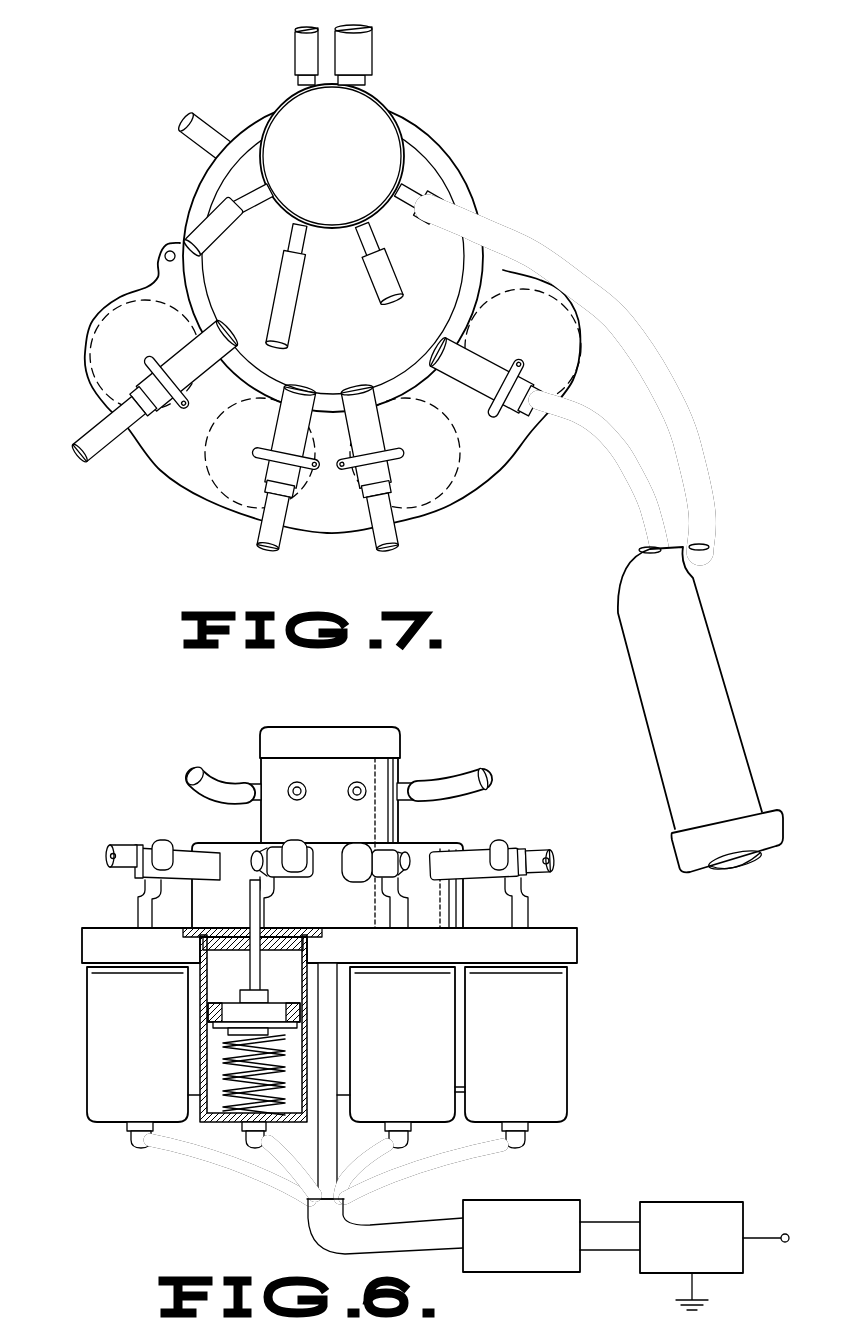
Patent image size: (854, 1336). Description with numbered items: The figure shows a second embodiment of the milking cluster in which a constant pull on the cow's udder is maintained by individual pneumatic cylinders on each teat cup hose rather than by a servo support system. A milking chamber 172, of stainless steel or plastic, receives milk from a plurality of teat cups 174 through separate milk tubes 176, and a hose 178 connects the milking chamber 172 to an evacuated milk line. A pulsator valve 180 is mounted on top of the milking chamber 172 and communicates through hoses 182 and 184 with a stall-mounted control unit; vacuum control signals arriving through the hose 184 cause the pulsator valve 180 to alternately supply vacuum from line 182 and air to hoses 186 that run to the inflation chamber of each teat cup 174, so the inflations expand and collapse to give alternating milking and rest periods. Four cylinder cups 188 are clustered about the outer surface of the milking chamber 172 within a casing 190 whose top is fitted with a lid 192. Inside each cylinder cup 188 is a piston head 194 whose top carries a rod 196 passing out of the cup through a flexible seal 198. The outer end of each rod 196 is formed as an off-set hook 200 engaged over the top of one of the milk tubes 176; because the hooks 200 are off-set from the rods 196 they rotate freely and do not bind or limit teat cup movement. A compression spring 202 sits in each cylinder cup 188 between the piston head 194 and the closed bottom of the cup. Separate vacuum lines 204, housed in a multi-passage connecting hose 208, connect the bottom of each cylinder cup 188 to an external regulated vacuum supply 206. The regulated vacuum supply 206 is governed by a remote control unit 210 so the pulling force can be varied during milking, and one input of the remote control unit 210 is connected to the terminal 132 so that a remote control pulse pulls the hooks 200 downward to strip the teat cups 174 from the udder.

In FIG. 6, the terminal 132 is at (785, 1232).
In FIG. 7, the milking chamber 172 is at (432, 185).
In FIG. 6, the milking chamber 172 is at (452, 843).
In FIG. 7, the teat cups 174 is at (715, 657).
In FIG. 7, the milk tubes 176 is at (618, 495).
In FIG. 6, the milk tubes 176 is at (113, 848).
In FIG. 7, the hose 178 is at (205, 112).
In FIG. 7, the pulsator valve 180 is at (377, 123).
In FIG. 6, the pulsator valve 180 is at (365, 733).
In FIG. 7, the hose 182 is at (373, 50).
In FIG. 7, the hose 184 is at (297, 55).
In FIG. 7, the hoses 186 is at (675, 397).
In FIG. 7, the cylinder cups 188 is at (577, 392).
In FIG. 6, the cylinder cups 188 is at (87, 1095).
In FIG. 6, the casing 190 is at (458, 1089).
In FIG. 6, the lid 192 is at (578, 952).
In FIG. 6, the piston head 194 is at (215, 1013).
In FIG. 6, the rod 196 is at (250, 967).
In FIG. 6, the flexible seal 198 is at (290, 937).
In FIG. 6, the off-set hook 200 is at (163, 840).
In FIG. 6, the compression spring 202 is at (223, 1050).
In FIG. 6, the vacuum lines 204 is at (275, 1155).
In FIG. 6, the regulated vacuum supply 206 is at (568, 1202).
In FIG. 6, the multi-passage connecting hose 208 is at (315, 1225).
In FIG. 6, the remote control unit 210 is at (707, 1205).